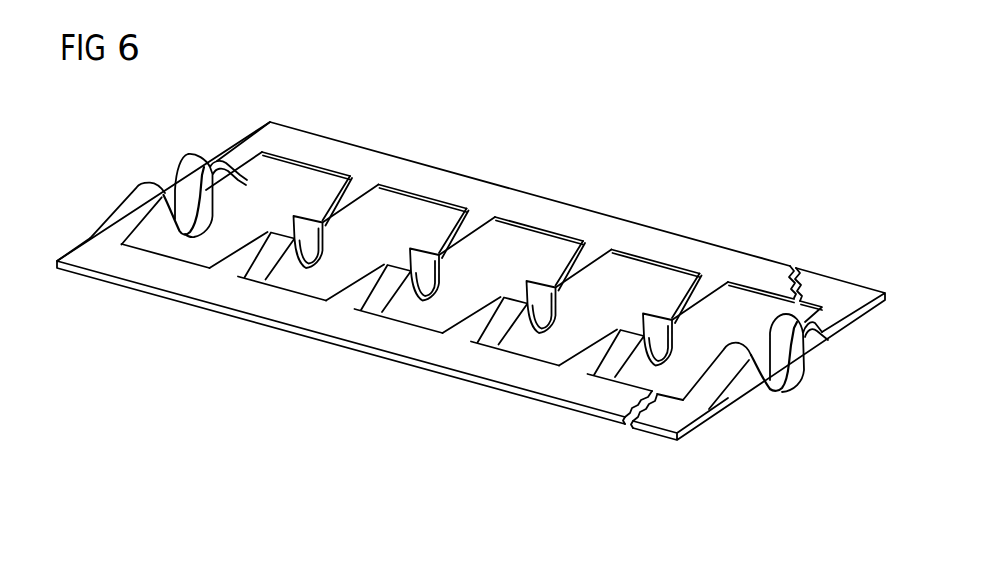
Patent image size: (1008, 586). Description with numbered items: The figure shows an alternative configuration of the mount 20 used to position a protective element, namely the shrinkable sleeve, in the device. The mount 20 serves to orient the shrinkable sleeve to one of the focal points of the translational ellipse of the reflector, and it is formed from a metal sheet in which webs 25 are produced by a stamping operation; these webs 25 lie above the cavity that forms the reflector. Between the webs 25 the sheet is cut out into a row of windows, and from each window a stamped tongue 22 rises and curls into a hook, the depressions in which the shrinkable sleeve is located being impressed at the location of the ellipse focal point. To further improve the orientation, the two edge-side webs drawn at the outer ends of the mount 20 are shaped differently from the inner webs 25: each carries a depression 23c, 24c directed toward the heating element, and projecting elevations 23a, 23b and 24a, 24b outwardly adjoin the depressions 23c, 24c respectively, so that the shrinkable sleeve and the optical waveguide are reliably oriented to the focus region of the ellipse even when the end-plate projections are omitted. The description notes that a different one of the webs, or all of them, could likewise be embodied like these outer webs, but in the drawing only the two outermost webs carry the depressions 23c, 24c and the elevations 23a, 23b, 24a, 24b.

The mount 20 is at (410, 346).
The hook-shaped contact tongue 22 is at (527, 298).
The webs 25 is at (573, 263).
The projecting elevation 23a is at (744, 356).
The projecting elevation 23b is at (823, 337).
The depression 23c is at (787, 386).
The projecting elevation 24a is at (140, 207).
The projecting elevation 24b is at (197, 153).
The depression 24c is at (190, 218).